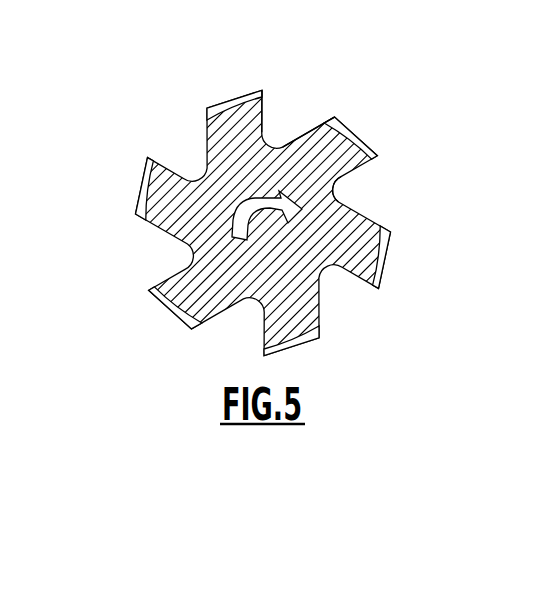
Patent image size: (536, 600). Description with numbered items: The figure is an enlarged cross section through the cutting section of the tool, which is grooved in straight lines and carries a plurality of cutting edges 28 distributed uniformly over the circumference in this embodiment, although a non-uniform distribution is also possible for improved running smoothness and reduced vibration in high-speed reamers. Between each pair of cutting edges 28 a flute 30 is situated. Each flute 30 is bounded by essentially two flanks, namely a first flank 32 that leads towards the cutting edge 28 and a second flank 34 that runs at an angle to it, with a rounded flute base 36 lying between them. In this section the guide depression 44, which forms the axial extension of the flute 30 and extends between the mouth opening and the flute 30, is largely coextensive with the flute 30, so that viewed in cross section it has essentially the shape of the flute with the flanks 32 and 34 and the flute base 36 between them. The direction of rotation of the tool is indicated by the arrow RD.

The flute 30 is at (268, 204).
The guide depression 44 is at (268, 204).
The cutting edge 28 is at (264, 98).
The first flank 32 is at (265, 123).
The second flank 34 is at (313, 128).
The flute base 36 is at (337, 192).
The direction of rotation RD is at (204, 225).